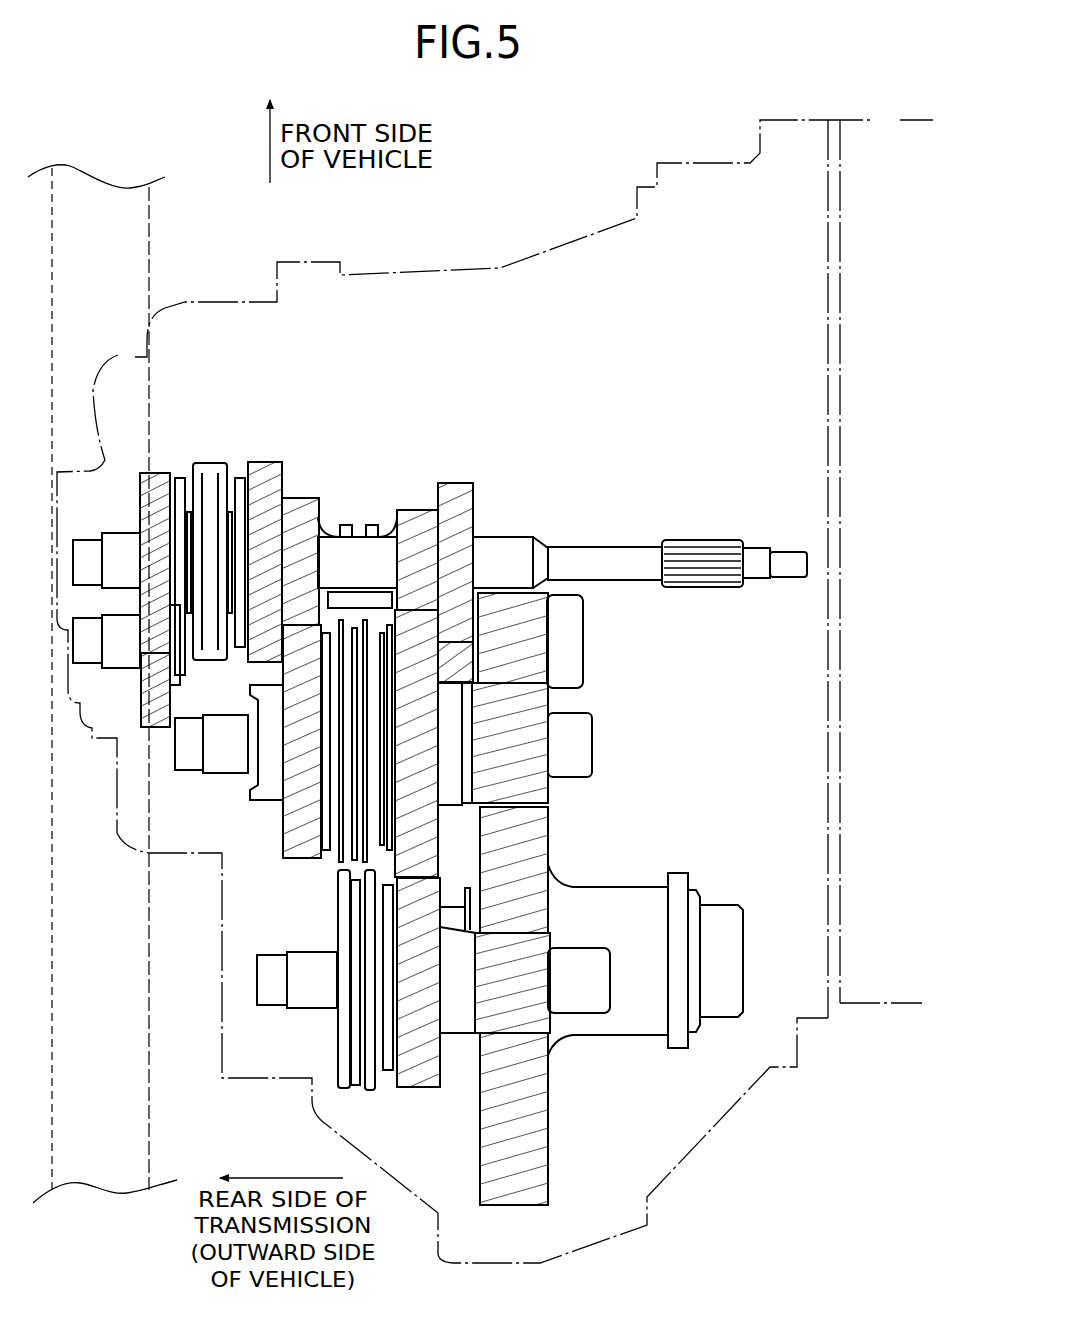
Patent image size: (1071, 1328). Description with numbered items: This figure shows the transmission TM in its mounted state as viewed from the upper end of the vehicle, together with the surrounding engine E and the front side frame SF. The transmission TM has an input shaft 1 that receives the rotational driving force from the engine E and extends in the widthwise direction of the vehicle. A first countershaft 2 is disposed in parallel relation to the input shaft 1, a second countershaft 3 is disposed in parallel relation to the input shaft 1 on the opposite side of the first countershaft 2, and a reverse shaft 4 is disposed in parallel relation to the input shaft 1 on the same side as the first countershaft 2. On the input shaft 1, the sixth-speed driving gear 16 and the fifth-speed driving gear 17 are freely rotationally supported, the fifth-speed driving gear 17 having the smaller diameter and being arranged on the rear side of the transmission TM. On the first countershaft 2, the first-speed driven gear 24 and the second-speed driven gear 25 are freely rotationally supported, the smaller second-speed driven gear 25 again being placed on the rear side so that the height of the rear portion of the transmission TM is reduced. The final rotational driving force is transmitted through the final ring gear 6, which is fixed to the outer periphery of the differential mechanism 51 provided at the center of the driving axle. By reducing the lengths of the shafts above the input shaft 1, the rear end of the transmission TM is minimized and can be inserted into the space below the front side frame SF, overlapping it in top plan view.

The input shaft 1 is at (642, 550).
The first countershaft 2 is at (578, 753).
The second countershaft 3 is at (572, 643).
The reverse shaft 4 is at (580, 960).
The final ring gear 6 is at (548, 1135).
The sixth-speed driving gear 16 is at (258, 461).
The fifth-speed driving gear 17 is at (155, 471).
The first-speed driven gear 24 is at (417, 842).
The second-speed driven gear 25 is at (297, 835).
The differential mechanism 51 is at (628, 1018).
The transmission TM is at (276, 295).
The front side frame SF is at (148, 293).
The engine E is at (870, 118).